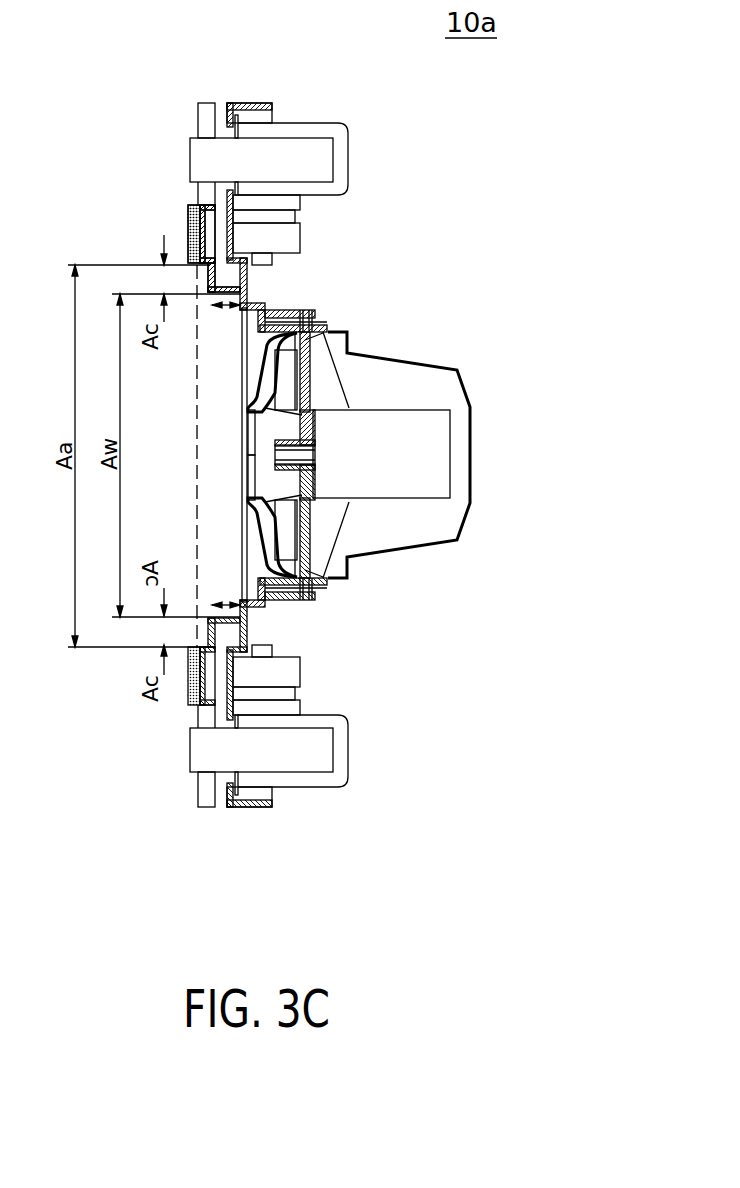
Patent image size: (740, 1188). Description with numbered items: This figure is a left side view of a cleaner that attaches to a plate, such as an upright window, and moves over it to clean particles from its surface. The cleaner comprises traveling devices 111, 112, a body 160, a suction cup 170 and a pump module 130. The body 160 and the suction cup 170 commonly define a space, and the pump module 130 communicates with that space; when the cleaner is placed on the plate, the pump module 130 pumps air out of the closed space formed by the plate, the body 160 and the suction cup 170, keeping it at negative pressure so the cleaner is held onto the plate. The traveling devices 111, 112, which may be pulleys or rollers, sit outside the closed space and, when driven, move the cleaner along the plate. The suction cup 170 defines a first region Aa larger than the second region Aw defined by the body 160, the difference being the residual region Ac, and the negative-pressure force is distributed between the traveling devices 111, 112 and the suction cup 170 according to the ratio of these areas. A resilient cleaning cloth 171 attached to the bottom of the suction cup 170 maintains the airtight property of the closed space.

The traveling device 111 is at (318, 162).
The traveling device 112 is at (318, 753).
The pump module 130 is at (436, 455).
The body 160 is at (263, 302).
The suction cup 170 is at (197, 205).
The cleaning cloth 171 is at (195, 230).